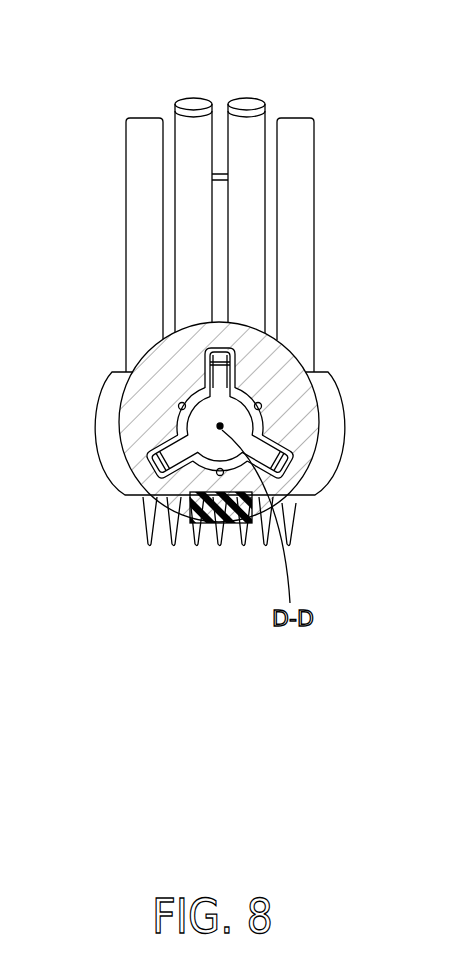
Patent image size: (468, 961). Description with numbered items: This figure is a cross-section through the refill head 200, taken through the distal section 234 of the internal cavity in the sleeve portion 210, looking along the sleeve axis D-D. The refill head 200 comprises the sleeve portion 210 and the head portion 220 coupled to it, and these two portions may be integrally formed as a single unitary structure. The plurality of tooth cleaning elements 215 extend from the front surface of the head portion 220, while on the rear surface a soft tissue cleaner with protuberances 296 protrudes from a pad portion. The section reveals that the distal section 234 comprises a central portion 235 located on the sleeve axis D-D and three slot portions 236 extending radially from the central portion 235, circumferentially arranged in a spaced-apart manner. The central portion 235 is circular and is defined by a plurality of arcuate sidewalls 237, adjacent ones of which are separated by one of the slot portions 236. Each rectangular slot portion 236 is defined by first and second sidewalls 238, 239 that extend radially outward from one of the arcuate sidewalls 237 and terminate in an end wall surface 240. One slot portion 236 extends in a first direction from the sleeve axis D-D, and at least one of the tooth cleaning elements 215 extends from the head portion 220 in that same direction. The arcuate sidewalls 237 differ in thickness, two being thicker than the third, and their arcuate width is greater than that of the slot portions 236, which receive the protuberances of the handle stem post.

The refill head 200 is at (209, 362).
The sleeve portion 210 is at (332, 428).
The tooth cleaning elements 215 is at (327, 163).
The head portion 220 is at (107, 437).
The distal section 234 is at (198, 452).
The central portion 235 is at (190, 419).
The slot portions 236 is at (233, 363).
The arcuate sidewalls 237 is at (185, 400).
The first sidewall 238 is at (215, 362).
The second sidewall 239 is at (237, 383).
The end wall surface 240 is at (220, 367).
The protuberances 296 is at (292, 537).